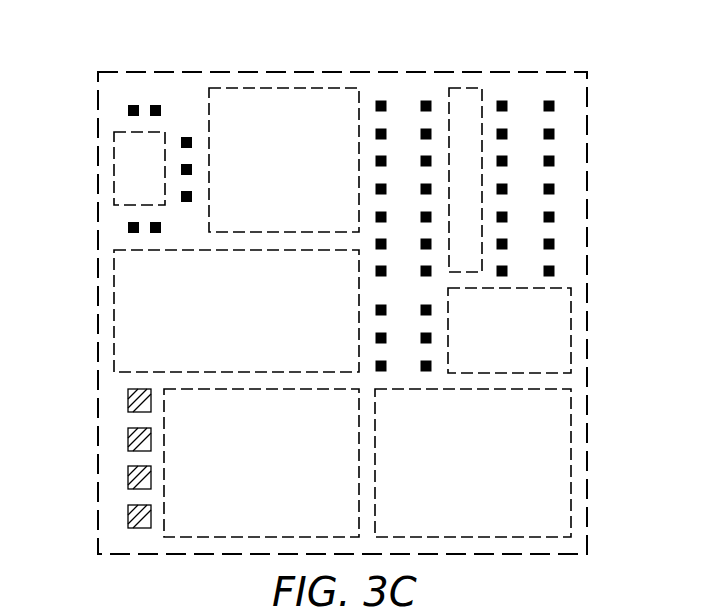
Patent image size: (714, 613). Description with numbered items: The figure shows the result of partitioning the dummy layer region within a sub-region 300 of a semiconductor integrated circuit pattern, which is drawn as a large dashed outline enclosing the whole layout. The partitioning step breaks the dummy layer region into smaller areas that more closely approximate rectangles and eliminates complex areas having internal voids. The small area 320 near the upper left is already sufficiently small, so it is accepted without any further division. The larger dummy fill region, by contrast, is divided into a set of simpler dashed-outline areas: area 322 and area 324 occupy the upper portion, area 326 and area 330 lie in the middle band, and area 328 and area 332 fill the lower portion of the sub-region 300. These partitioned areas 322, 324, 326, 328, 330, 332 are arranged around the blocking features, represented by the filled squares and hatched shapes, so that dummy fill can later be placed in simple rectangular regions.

The sub-region 300 is at (205, 66).
The area 320 is at (114, 181).
The area 322 is at (293, 88).
The area 324 is at (461, 88).
The area 326 is at (114, 305).
The area 328 is at (189, 537).
The area 330 is at (571, 340).
The area 332 is at (571, 485).